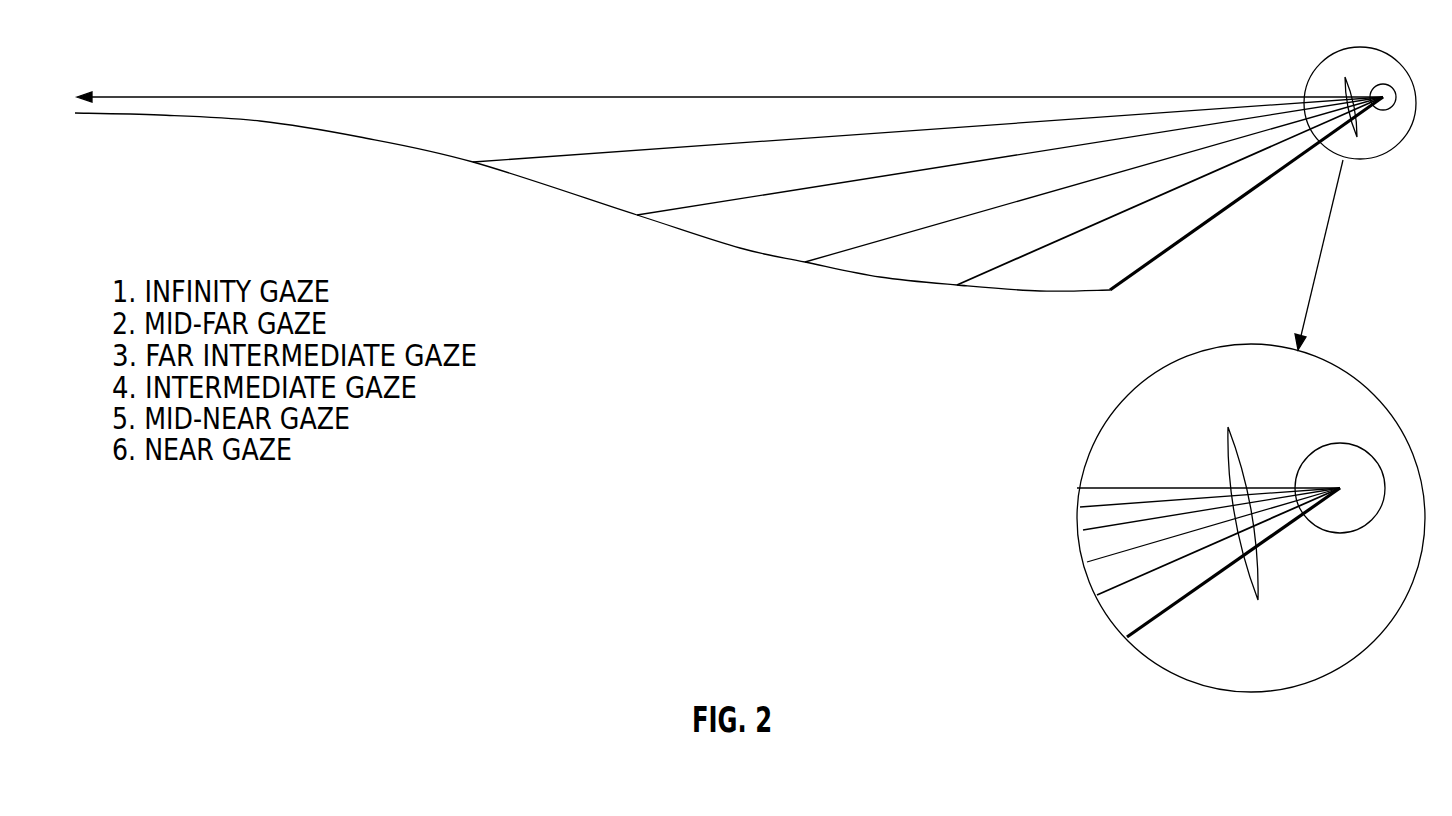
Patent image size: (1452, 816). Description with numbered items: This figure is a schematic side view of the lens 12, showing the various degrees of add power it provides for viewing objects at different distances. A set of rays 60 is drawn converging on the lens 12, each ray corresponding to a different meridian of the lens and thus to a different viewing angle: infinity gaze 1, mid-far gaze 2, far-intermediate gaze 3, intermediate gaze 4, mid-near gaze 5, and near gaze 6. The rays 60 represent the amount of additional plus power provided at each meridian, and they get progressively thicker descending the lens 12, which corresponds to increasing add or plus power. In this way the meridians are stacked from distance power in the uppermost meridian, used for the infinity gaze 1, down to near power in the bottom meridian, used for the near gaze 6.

The infinity gaze 1 is at (730, 79).
The mid-far gaze 2 is at (928, 129).
The far-intermediate gaze 3 is at (1010, 156).
The intermediate gaze 4 is at (1094, 179).
The mid-near gaze 5 is at (1170, 191).
The near gaze 6 is at (1260, 235).
The lens 12 is at (1353, 87).
The rays 60 is at (1170, 200).